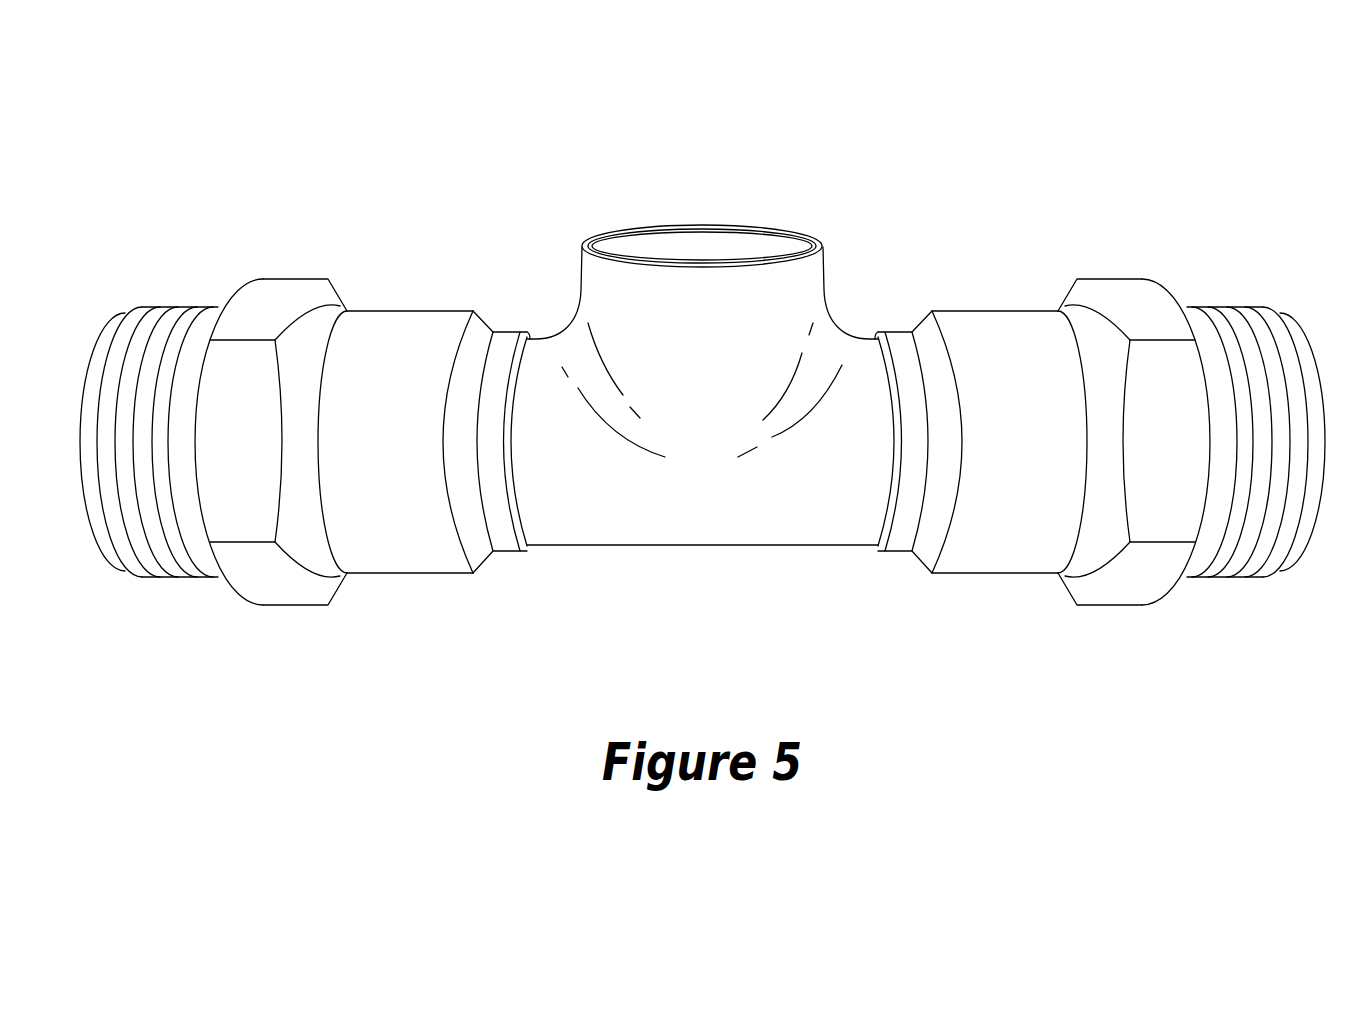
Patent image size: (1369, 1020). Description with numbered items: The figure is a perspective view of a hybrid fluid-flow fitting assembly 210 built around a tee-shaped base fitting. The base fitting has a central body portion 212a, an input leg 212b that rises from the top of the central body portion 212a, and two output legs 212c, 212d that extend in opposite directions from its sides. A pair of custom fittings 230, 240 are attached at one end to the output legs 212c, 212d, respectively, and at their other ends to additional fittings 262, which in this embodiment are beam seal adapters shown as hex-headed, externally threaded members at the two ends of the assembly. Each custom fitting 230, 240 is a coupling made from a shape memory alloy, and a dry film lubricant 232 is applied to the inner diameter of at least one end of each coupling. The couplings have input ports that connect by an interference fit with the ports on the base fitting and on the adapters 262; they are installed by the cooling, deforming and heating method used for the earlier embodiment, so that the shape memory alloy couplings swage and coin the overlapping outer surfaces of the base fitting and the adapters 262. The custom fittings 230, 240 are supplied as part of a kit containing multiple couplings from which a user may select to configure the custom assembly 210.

The hybrid fluid-flow fitting assembly 210 is at (1125, 102).
The central body portion 212a is at (713, 522).
The input leg 212b is at (810, 278).
The output leg 212c is at (560, 498).
The output leg 212d is at (850, 503).
The custom fitting 230 is at (422, 330).
The dry film lubricant 232 is at (498, 527).
The custom fitting 240 is at (998, 322).
The additional fitting 262 is at (268, 578).